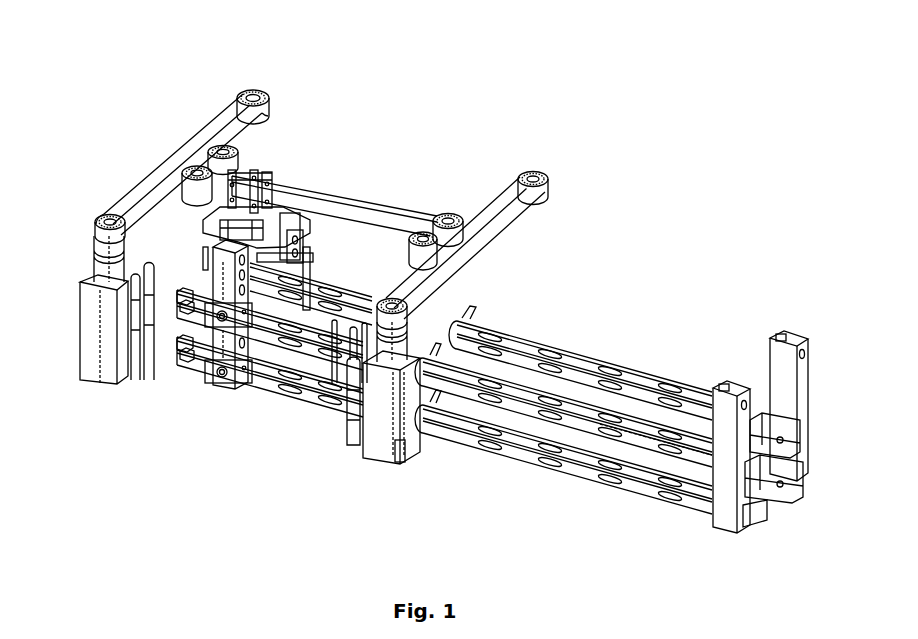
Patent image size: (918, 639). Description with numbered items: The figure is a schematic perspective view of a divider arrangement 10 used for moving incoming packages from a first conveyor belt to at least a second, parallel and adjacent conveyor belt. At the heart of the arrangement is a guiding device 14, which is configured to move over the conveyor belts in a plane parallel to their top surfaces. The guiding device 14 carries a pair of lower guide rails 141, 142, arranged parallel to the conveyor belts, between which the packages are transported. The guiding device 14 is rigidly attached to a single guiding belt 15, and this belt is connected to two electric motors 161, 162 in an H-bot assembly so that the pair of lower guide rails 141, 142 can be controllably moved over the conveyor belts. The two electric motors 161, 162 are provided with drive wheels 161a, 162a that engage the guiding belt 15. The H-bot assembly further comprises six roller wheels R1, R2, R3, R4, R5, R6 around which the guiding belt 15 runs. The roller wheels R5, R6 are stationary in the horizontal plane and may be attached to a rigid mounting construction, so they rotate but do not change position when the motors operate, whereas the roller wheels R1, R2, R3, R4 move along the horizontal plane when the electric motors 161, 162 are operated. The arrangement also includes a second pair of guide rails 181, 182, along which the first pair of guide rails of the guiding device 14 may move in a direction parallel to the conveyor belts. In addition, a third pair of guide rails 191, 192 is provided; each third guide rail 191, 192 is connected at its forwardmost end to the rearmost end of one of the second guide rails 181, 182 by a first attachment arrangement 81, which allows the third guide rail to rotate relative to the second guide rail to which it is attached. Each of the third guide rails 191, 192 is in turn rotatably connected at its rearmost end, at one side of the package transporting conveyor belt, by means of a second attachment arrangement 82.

The divider arrangement 10 is at (520, 103).
The guiding device 14 is at (236, 395).
The guiding belt 15 is at (337, 200).
The first attachment arrangement 81 is at (490, 377).
The second attachment arrangement 82 is at (683, 428).
The lower guide rail 141 is at (227, 383).
The lower guide rail 142 is at (187, 388).
The electric motor 161 is at (103, 362).
The drive wheel 161a is at (97, 213).
The electric motor 162 is at (407, 458).
The drive wheel 162a is at (363, 443).
The second guide rail 181 is at (525, 410).
The second guide rail 182 is at (327, 407).
The third guide rail 191 is at (647, 455).
The third guide rail 192 is at (577, 450).
The roller wheel R1 is at (118, 212).
The roller wheel R2 is at (217, 150).
The roller wheel R3 is at (517, 253).
The roller wheel R4 is at (487, 213).
The roller wheel R5 is at (240, 90).
The roller wheel R6 is at (548, 178).